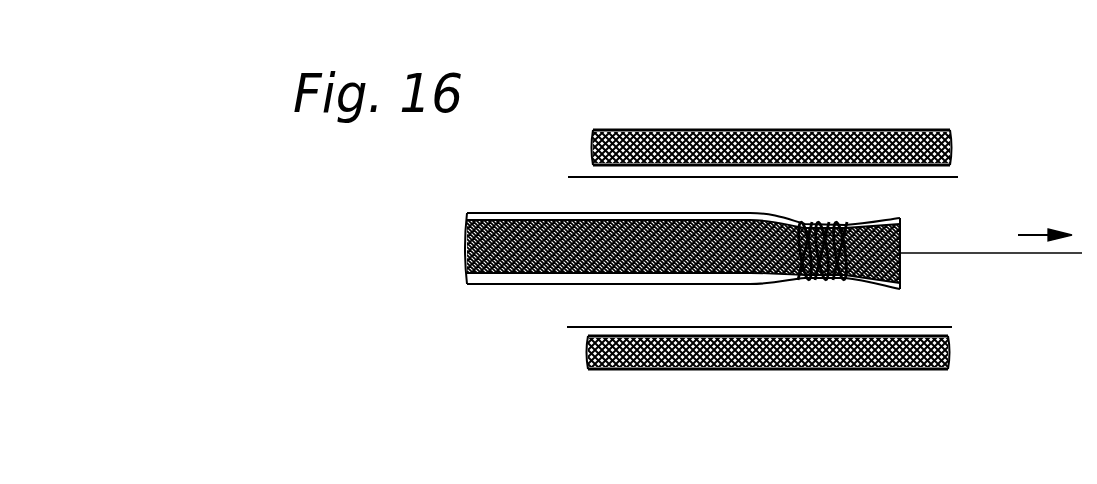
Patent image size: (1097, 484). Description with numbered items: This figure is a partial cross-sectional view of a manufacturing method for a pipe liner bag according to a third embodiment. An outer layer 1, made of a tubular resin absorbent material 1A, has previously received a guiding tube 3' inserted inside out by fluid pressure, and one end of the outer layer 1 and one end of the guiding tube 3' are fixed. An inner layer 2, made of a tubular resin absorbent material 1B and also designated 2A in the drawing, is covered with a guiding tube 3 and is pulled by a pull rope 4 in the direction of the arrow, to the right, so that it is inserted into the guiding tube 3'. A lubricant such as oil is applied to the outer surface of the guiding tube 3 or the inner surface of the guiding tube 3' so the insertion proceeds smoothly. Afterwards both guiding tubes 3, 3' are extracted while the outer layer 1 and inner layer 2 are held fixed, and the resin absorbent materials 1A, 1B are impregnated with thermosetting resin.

The outer layer 1 is at (853, 73).
The tubular resin absorbent material 1A is at (767, 130).
The tubular resin absorbent material 1B is at (832, 130).
The inner layer 2 is at (677, 278).
The inner braid portion 2A is at (495, 277).
The guiding tube 3 is at (682, 215).
The guiding tube 3' is at (762, 252).
The pull rope 4 is at (1015, 256).